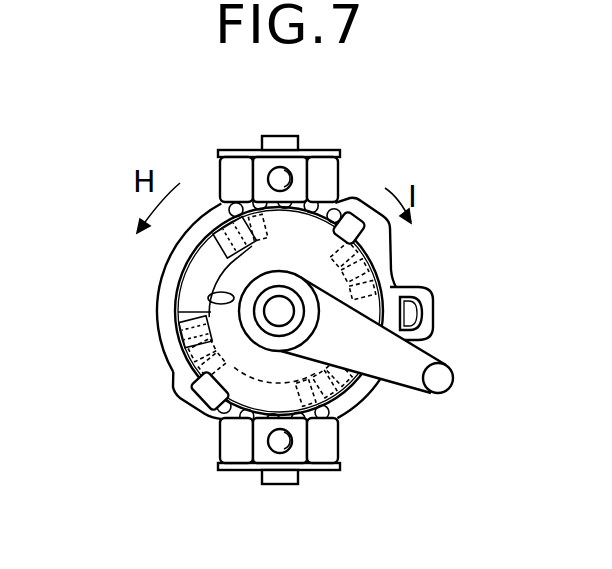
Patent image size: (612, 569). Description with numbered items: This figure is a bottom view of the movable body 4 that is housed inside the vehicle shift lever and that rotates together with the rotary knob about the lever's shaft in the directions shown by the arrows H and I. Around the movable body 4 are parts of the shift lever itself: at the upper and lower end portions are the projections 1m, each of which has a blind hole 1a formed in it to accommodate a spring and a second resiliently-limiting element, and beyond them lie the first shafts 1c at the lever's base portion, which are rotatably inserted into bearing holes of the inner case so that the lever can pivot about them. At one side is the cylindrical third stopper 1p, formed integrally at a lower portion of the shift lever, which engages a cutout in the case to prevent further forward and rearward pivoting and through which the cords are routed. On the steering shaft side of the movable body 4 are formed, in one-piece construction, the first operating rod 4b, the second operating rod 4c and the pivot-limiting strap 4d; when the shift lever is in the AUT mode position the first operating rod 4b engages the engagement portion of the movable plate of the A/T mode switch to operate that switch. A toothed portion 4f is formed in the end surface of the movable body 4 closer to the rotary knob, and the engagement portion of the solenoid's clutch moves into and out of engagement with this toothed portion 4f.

The blind hole 1a is at (292, 181).
The first shaft 1c is at (263, 133).
The projection 1m is at (323, 150).
The third stopper 1p is at (433, 311).
The movable body 4 is at (370, 308).
The first operating rod 4b is at (454, 364).
The second operating rod 4c is at (267, 298).
The pivot-limiting strap 4d is at (208, 298).
The toothed portion 4f is at (397, 263).